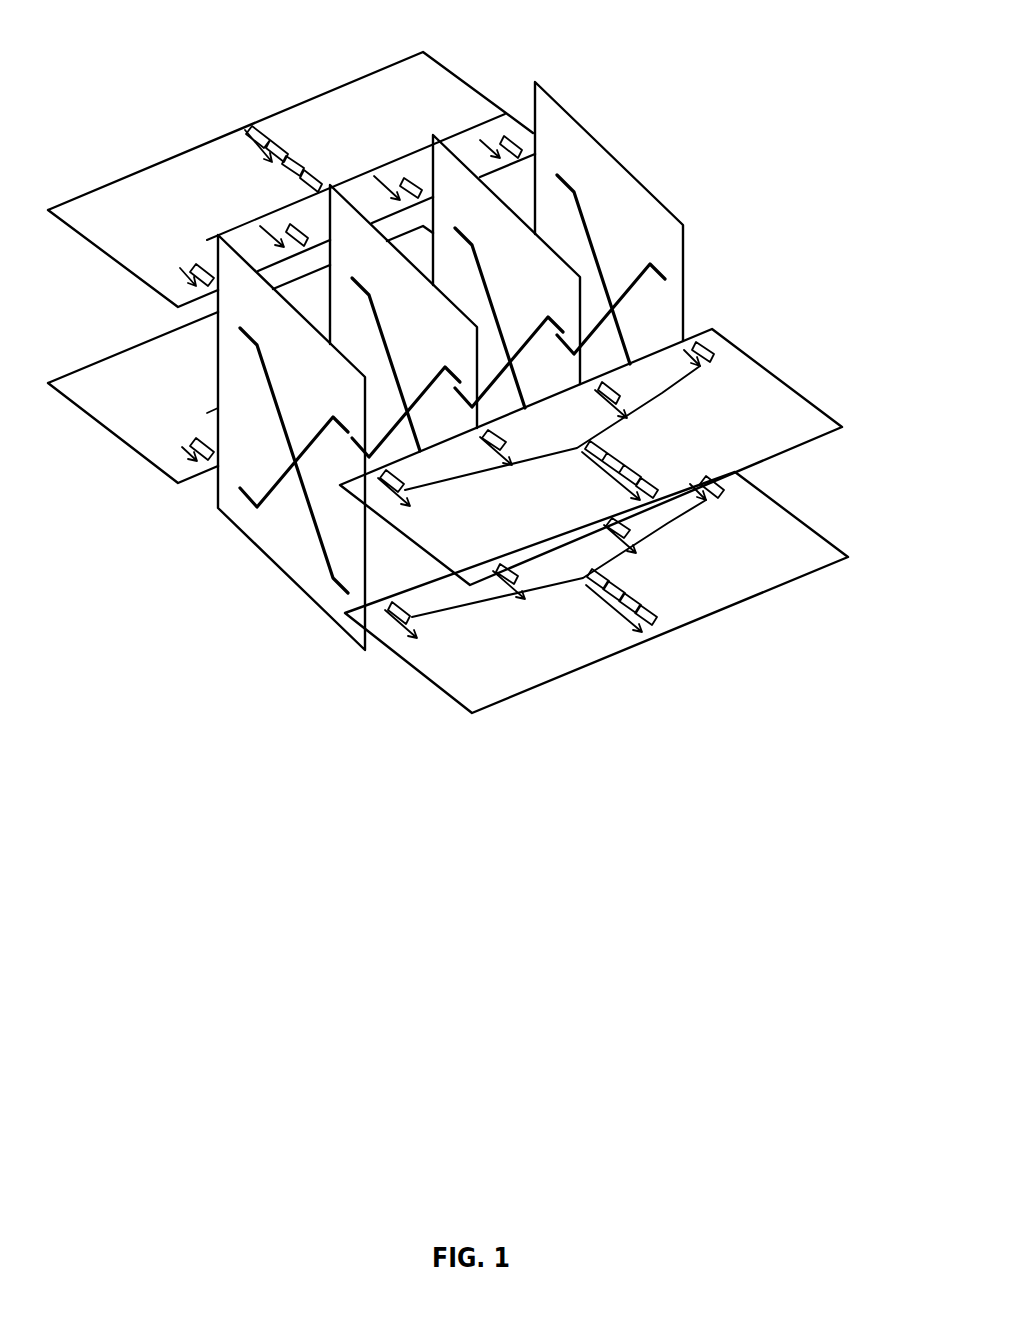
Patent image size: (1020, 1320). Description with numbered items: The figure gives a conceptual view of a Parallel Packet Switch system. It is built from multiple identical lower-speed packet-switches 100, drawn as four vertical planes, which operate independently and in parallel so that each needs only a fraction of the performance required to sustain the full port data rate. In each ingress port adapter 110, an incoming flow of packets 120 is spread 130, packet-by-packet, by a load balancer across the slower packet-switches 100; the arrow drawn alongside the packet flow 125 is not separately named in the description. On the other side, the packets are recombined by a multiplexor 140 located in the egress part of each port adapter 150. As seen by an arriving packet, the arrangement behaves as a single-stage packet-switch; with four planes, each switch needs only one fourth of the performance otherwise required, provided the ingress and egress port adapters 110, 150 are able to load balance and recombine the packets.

The packet-switch 100 is at (668, 208).
The ingress port adapter 110 is at (470, 86).
The incoming flow of packets 120 is at (258, 127).
The signal path arrow 125 is at (246, 134).
The spreading 130 is at (206, 248).
The multiplexor 140 is at (662, 393).
The egress port adapter 150 is at (828, 413).